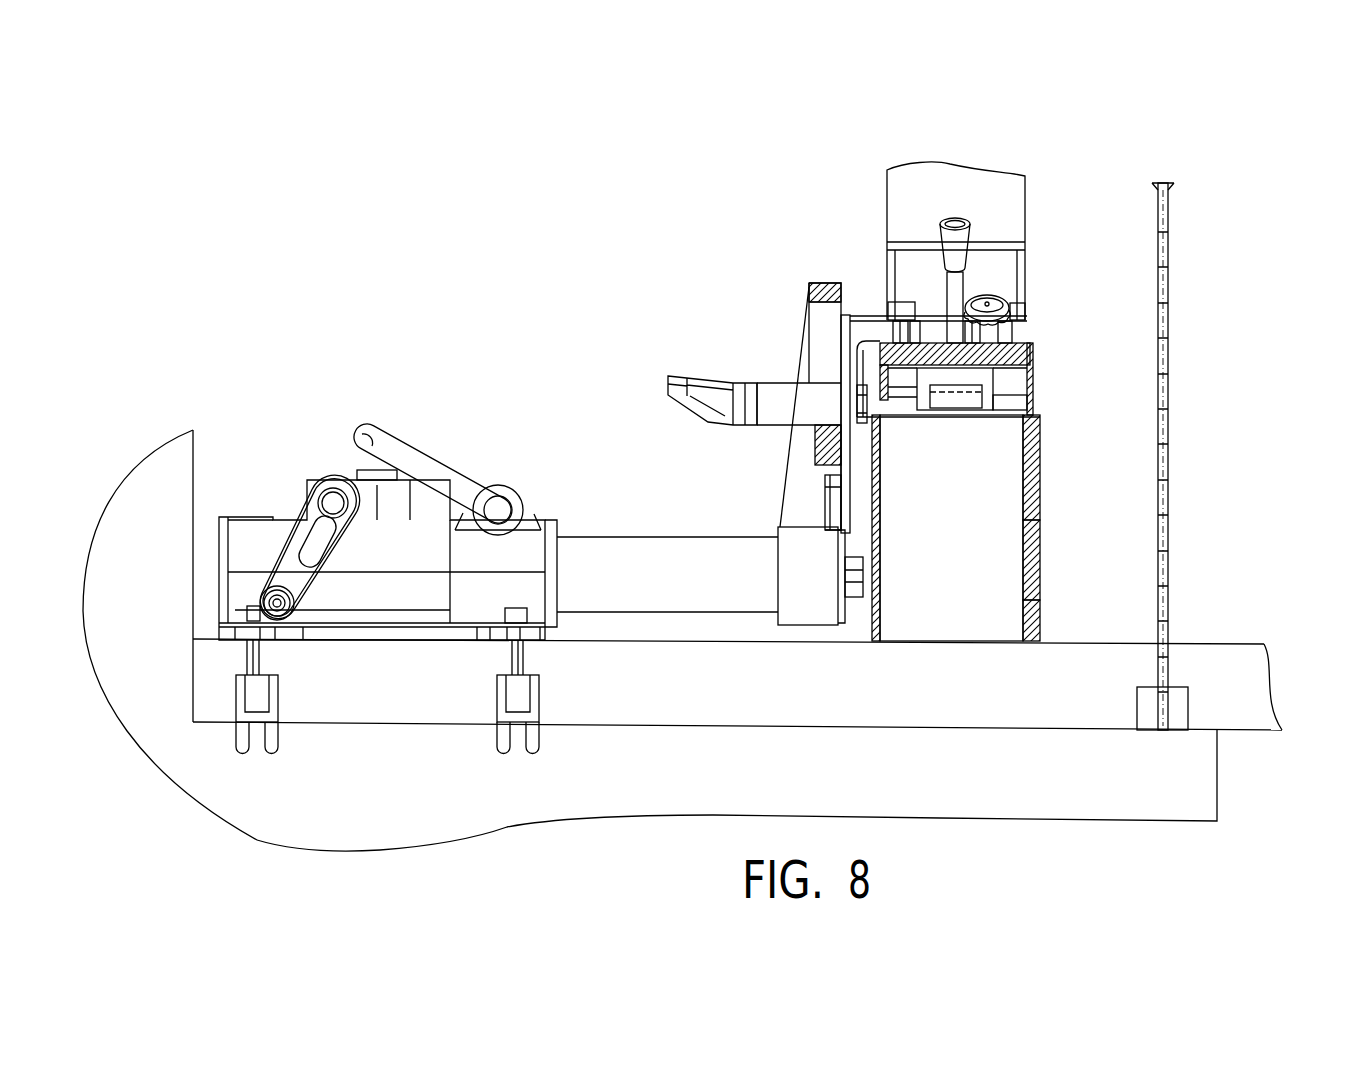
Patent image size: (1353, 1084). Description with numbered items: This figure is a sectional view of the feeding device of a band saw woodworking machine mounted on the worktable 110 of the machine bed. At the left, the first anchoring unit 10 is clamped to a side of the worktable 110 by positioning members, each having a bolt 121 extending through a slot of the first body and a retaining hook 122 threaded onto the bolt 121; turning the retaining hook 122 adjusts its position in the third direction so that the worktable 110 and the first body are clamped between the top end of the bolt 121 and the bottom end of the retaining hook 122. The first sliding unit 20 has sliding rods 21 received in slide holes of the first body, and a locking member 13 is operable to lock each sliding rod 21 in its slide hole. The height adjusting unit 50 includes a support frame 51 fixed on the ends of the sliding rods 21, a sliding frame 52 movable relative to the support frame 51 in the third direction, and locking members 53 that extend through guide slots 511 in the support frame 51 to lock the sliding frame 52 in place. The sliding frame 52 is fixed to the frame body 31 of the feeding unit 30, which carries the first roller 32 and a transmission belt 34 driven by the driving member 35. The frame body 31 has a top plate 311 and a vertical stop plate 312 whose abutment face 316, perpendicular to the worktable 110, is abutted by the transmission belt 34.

The first anchoring unit 10 is at (512, 470).
The locking member 13 is at (410, 452).
The first sliding unit 20 is at (710, 505).
The sliding rod 21 is at (625, 550).
The feeding unit 30 is at (1074, 358).
The frame body 31 is at (1035, 352).
The top plate 311 is at (1035, 328).
The vertical stop plate 312 is at (1035, 495).
The abutment face 316 is at (1035, 558).
The first roller 32 is at (948, 475).
The transmission belt 34 is at (1035, 525).
The driving member 35 is at (992, 188).
The height adjusting unit 50 is at (805, 335).
The support frame 51 is at (822, 308).
The guide slot 511 is at (815, 318).
The sliding frame 52 is at (870, 316).
The locking member 53 is at (722, 398).
The worktable 110 is at (1168, 200).
The bolt 121 is at (508, 657).
The retaining hook 122 is at (540, 693).